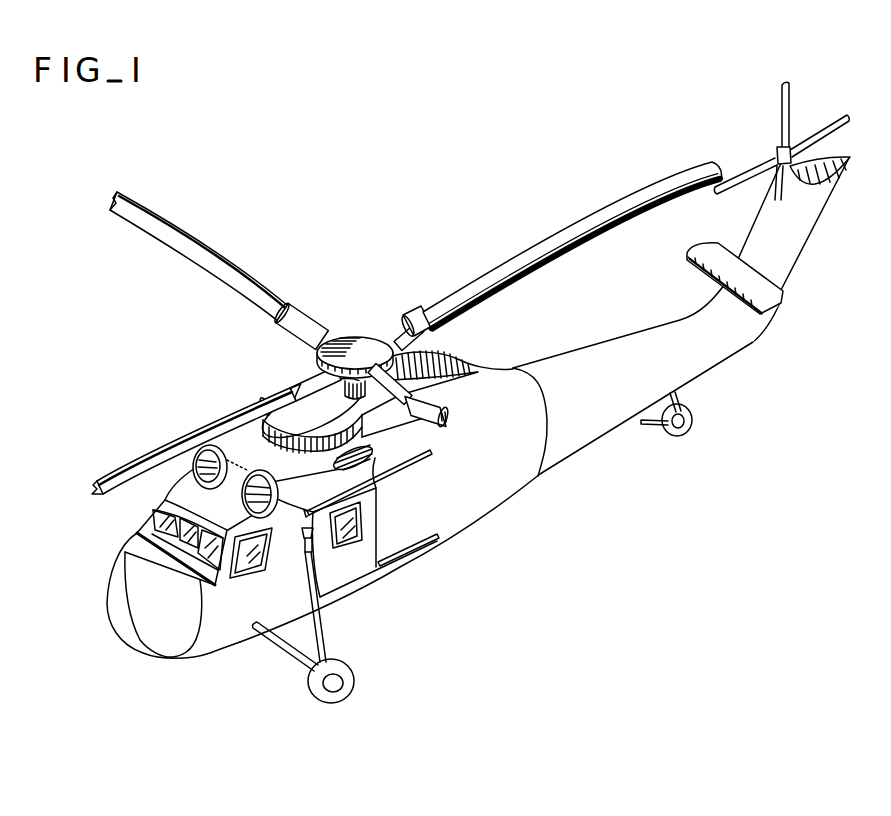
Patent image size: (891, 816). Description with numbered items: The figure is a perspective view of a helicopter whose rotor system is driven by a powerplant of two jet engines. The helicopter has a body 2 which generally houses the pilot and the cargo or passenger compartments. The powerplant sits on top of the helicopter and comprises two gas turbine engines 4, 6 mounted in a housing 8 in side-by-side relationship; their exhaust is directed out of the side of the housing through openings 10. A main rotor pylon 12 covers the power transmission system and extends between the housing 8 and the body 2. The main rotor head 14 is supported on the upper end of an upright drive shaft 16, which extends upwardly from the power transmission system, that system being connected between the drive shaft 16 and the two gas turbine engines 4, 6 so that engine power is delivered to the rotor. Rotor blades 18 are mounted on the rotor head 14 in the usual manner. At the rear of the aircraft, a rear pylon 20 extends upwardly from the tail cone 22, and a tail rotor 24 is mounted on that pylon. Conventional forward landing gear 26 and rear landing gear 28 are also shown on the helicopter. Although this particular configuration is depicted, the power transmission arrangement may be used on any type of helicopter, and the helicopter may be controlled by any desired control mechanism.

The body 2 is at (513, 368).
The gas turbine engine 4 is at (207, 457).
The gas turbine engine 6 is at (259, 489).
The housing 8 is at (249, 452).
The openings 10 is at (336, 466).
The main rotor pylon 12 is at (402, 428).
The main rotor head 14 is at (351, 347).
The drive shaft 16 is at (344, 386).
The rotor blades 18 is at (184, 238).
The rear pylon 20 is at (797, 230).
The tail cone 22 is at (633, 332).
The tail rotor 24 is at (762, 132).
The forward landing gear 26 is at (355, 668).
The rear landing gear 28 is at (695, 420).